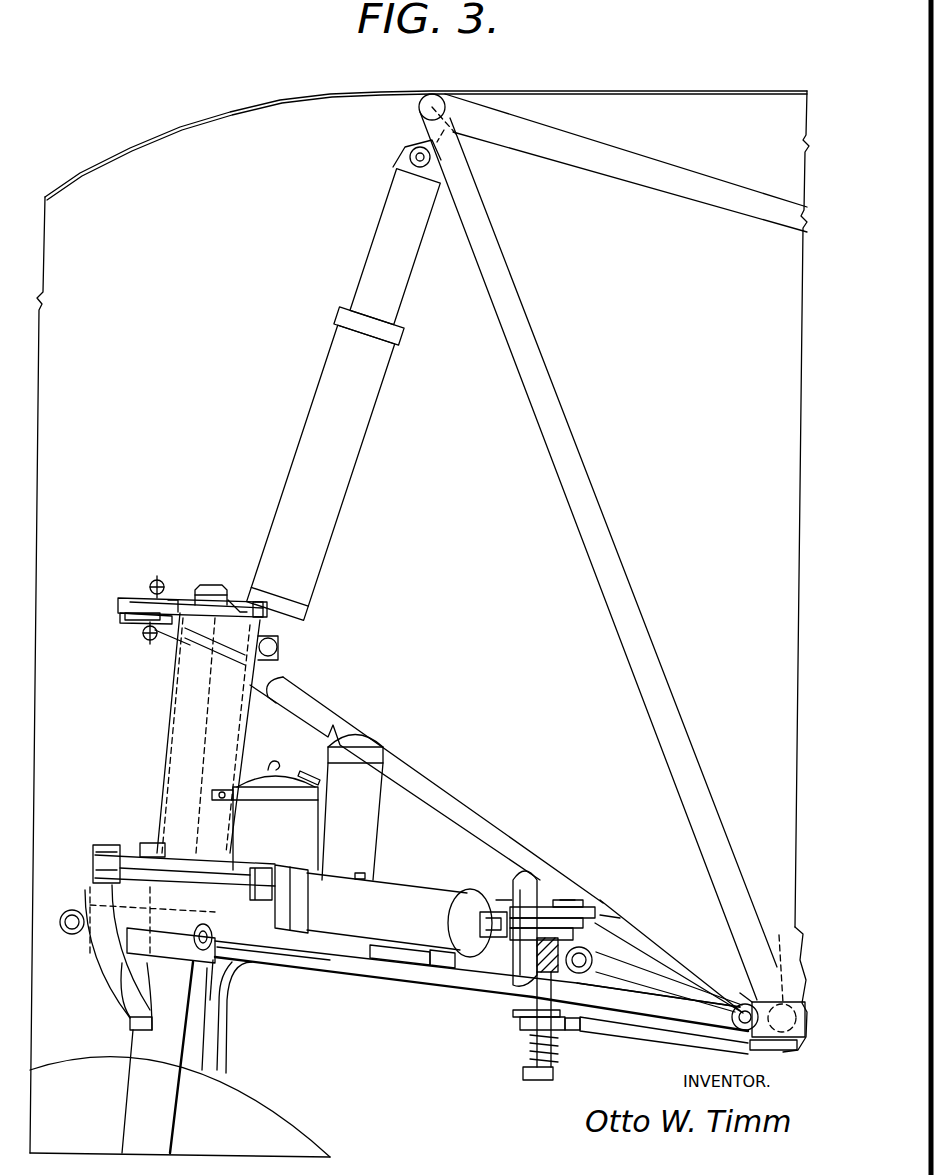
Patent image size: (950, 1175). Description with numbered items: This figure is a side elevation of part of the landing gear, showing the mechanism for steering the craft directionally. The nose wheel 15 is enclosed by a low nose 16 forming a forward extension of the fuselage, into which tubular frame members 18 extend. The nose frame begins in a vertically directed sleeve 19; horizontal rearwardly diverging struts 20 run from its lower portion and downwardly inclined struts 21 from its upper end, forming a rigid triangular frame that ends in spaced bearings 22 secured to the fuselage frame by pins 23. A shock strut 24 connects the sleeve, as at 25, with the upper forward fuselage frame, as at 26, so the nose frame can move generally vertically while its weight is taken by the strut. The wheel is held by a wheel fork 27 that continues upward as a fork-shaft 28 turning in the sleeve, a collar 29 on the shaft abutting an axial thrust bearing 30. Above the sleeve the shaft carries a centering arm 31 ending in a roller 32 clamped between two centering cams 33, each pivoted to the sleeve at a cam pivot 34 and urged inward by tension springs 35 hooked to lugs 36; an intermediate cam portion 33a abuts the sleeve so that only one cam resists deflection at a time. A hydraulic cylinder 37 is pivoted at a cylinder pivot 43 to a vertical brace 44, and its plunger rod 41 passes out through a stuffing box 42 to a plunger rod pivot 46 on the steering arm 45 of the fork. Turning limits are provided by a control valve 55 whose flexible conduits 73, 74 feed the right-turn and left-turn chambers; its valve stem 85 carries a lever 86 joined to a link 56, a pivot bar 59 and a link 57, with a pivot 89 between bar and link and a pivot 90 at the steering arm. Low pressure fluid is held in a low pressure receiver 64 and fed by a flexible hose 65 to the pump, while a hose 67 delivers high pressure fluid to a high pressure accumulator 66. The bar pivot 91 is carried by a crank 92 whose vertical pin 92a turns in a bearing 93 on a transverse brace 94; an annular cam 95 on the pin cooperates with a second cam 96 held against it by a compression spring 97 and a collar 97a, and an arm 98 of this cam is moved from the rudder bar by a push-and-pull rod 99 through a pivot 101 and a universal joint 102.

The nose wheel 15 is at (93, 1086).
The nose 16 is at (255, 80).
The tubular frame members 18 is at (696, 180).
The vertically directed sleeve 19 is at (214, 750).
The rearwardly diverging struts 20 is at (360, 966).
The inclined rearwardly diverging struts 21 is at (483, 812).
The spaced bearings 22 is at (735, 1025).
The pins 23 is at (735, 1008).
The shock strut 24 is at (370, 415).
The shock strut lower connection 25 is at (280, 647).
The shock strut upper connection 26 is at (409, 156).
The wheel fork 27 is at (170, 1105).
The fork-shaft 28 is at (222, 577).
The collar 29 is at (160, 967).
The axial thrust bearing 30 is at (216, 950).
The centering arm 31 is at (185, 598).
The roller 32 is at (117, 606).
The centering cams 33 is at (133, 622).
The intermediate cam portion 33a is at (236, 600).
The cam pivot 34 is at (262, 600).
The tension springs 35 is at (150, 586).
The lugs 36 is at (157, 644).
The hydraulic cylinder 37 is at (404, 912).
The plunger rod 41 is at (255, 872).
The stuffing box 42 is at (265, 872).
The cylinder pivot 43 is at (480, 922).
The vertical brace 44 is at (513, 965).
The steering arm 45 is at (105, 975).
The plunger rod pivot 46 is at (92, 855).
The control valve 55 is at (348, 950).
The link 56 is at (565, 900).
The link 57 is at (500, 898).
The pivot bar 59 is at (622, 915).
The low pressure receiver 64 is at (298, 818).
The flexible hose 65 is at (227, 1032).
The high pressure accumulator 66 is at (368, 812).
The hose 67 is at (222, 1000).
The flexible conduit 73 is at (452, 968).
The high pressure flexible conduit 74 is at (420, 962).
The valve stem 85 is at (366, 876).
The lever 86 is at (607, 917).
The pivot 89 is at (528, 876).
The pivot 90 is at (152, 838).
The bar pivot 91 is at (577, 907).
The crank 92 is at (598, 932).
The vertical pin 92a is at (530, 1050).
The bearing 93 is at (596, 955).
The transverse brace 94 is at (652, 972).
The annular cam 95 is at (578, 988).
The second cam 96 is at (530, 1010).
The compression spring 97 is at (554, 1056).
The collar 97a is at (523, 1074).
The arm 98 is at (520, 1018).
The push-and-pull rod 99 is at (655, 1030).
The pivot 101 is at (530, 1030).
The universal joint 102 is at (745, 1000).